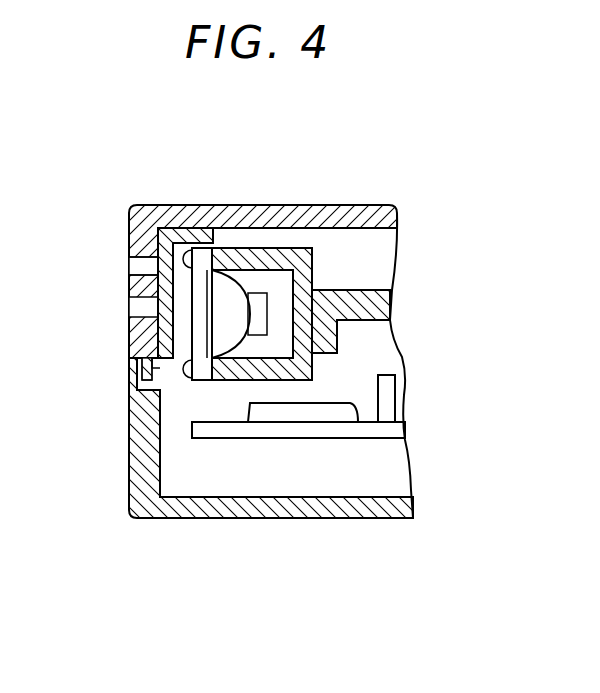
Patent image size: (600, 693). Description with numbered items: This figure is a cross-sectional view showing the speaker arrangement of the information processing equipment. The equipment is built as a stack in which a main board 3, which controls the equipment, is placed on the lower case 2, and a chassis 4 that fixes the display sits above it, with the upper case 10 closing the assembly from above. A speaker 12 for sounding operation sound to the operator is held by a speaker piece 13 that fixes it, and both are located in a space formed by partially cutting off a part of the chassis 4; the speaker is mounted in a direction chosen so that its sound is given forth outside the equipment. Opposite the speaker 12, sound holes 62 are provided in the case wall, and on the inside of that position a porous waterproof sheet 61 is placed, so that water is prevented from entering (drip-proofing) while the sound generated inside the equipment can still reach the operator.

The upper case 10 is at (200, 207).
The lower case 2 is at (180, 518).
The porous waterproof sheet 61 is at (158, 235).
The sound holes 62 is at (137, 266).
The speaker piece 13 is at (298, 258).
The speaker 12 is at (235, 290).
The chassis 4 is at (388, 298).
The main board 3 is at (262, 432).